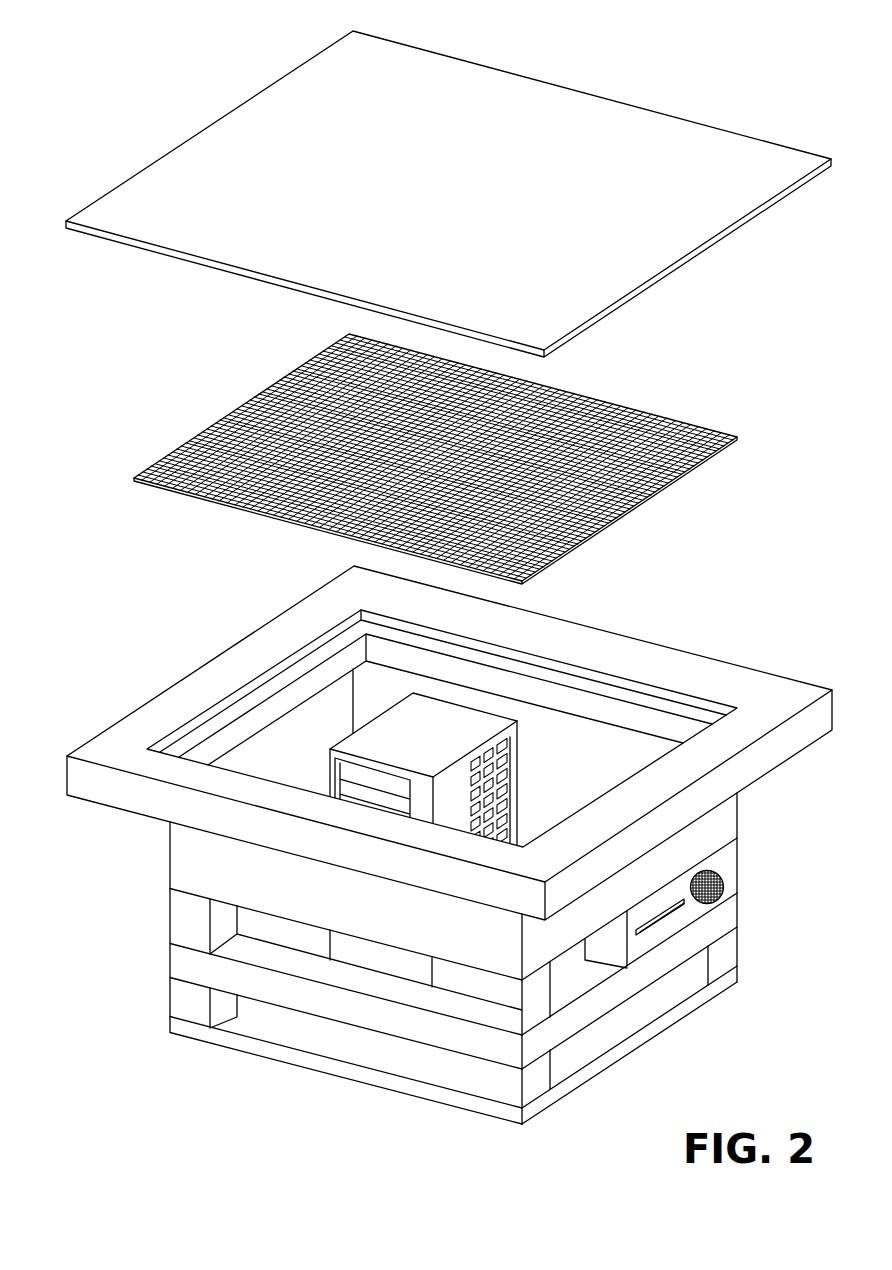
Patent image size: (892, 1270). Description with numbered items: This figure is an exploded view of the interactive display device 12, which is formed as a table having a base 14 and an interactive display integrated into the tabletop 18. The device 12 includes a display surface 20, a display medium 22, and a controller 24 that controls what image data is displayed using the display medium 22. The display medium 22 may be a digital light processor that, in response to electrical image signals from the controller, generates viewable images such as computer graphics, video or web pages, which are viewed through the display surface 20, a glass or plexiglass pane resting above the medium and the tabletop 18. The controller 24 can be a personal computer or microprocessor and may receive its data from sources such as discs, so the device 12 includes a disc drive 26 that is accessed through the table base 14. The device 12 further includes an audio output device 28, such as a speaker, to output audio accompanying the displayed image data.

The interactive display device 12 is at (141, 46).
The base 14 is at (128, 952).
The tabletop 18 is at (133, 798).
The display surface 20 is at (146, 190).
The display medium 22 is at (178, 461).
The controller 24 is at (515, 737).
The disc drive 26 is at (686, 905).
The audio output device 28 is at (727, 884).